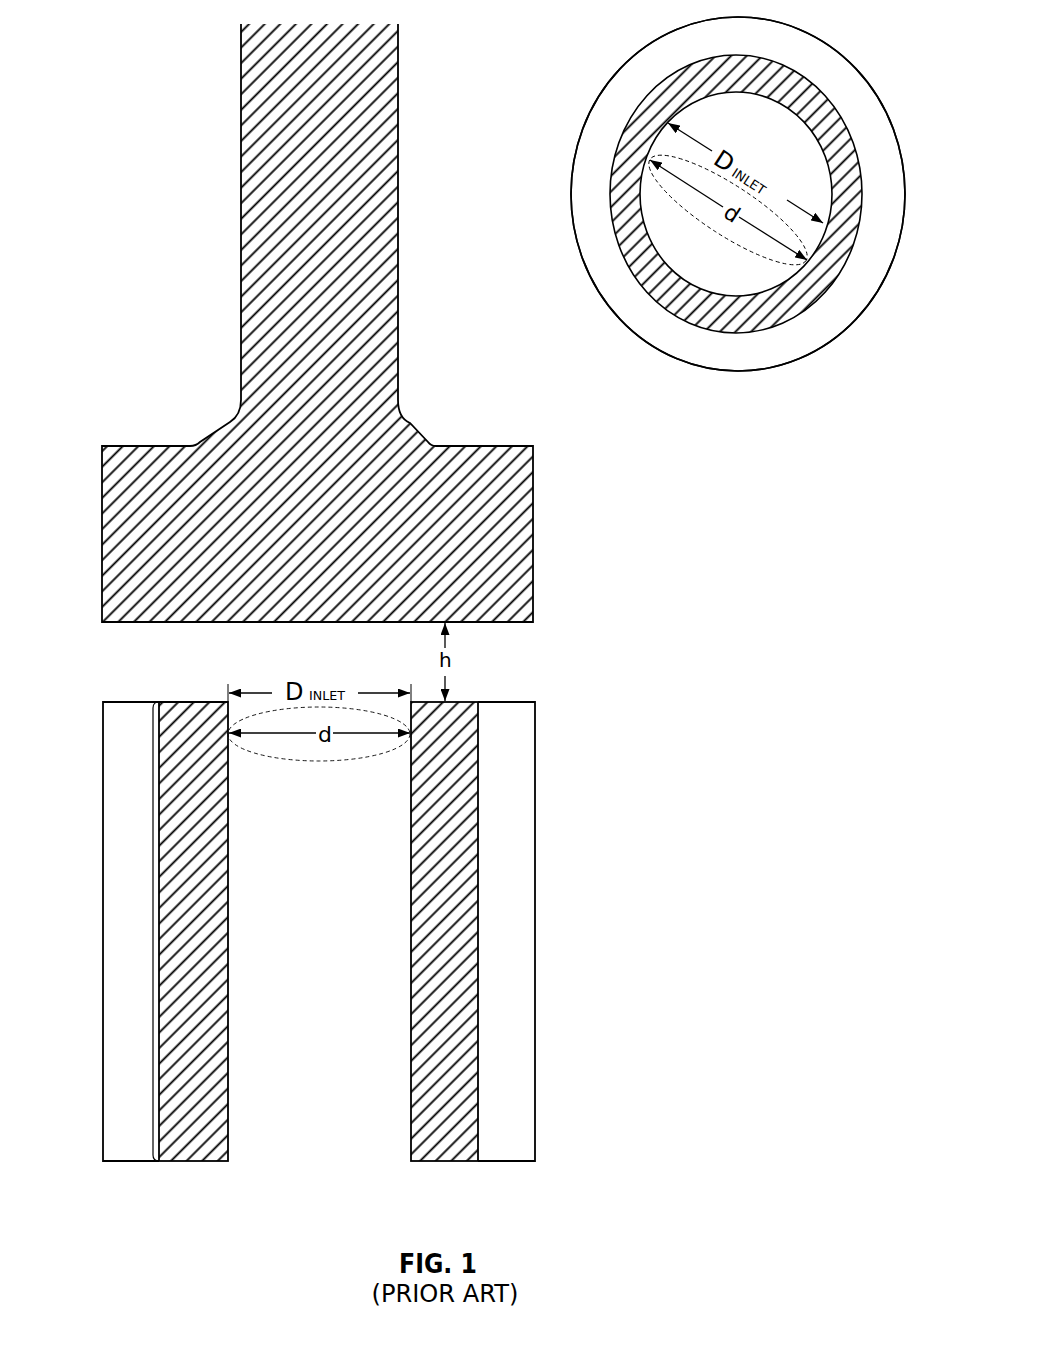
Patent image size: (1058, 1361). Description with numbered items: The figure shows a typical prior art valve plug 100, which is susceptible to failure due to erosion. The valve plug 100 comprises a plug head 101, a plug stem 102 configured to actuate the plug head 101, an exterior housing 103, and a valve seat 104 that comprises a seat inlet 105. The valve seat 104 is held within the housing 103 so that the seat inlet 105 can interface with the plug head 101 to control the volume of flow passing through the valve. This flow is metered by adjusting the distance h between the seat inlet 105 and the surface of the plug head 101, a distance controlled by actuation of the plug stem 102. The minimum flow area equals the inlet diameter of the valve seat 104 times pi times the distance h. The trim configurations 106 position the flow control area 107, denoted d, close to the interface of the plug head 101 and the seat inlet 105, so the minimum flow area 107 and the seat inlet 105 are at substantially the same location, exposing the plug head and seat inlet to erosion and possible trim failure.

The prior art valve plug 100 is at (518, 48).
The plug head 101 is at (532, 527).
The plug stem 102 is at (378, 193).
The exterior housing 103 is at (508, 764).
The valve seat 104 is at (150, 928).
The seat inlet 105 is at (185, 702).
The trim configurations 106 is at (462, 1089).
The flow control area 107 is at (330, 755).